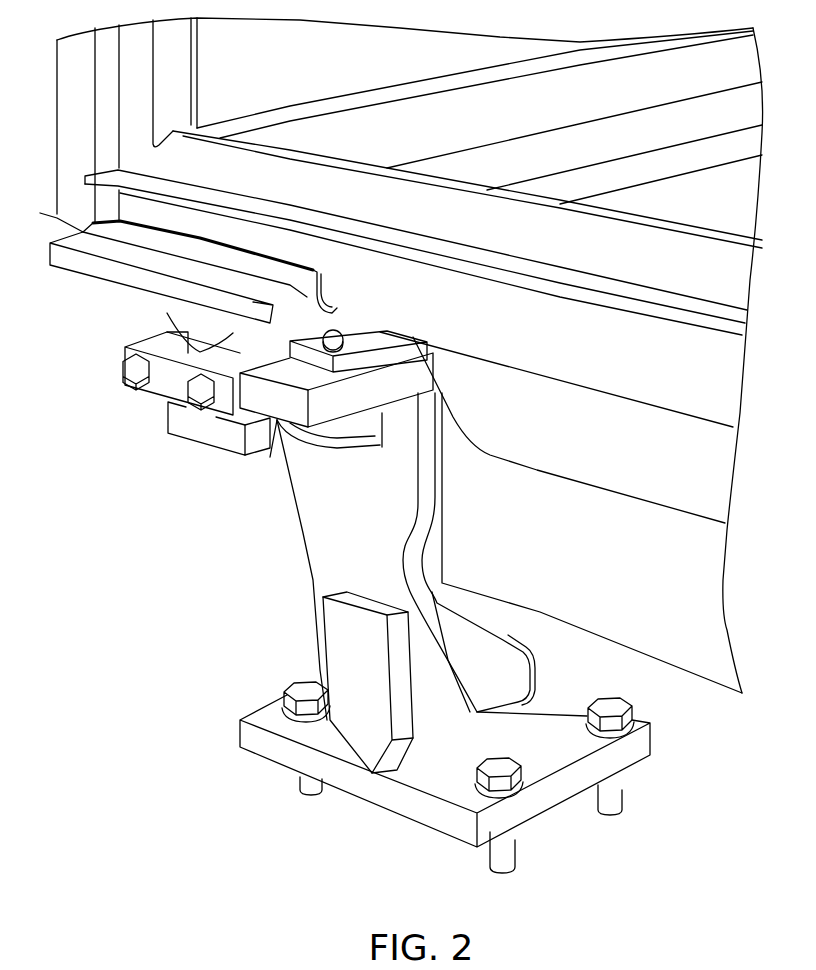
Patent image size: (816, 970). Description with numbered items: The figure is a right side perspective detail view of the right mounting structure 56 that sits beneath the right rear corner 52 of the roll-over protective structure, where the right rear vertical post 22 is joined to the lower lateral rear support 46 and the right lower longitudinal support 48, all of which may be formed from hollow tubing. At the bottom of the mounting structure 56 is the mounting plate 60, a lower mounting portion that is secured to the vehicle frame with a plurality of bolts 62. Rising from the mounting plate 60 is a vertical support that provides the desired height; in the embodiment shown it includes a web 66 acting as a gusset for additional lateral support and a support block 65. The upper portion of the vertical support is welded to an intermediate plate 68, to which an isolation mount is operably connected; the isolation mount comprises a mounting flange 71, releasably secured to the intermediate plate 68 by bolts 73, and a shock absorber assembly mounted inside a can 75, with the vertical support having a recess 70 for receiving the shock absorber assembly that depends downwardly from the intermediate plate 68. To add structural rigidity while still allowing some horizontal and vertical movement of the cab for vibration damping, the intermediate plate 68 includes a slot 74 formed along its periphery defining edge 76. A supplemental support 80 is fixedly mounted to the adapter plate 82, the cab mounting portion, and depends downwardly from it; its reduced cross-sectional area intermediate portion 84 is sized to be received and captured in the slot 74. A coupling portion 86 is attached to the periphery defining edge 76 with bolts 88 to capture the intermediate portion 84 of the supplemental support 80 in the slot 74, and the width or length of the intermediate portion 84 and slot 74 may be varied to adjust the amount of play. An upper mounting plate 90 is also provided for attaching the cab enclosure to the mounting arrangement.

The right rear vertical post 22 is at (100, 104).
The lower lateral rear support 46 is at (379, 120).
The right lower longitudinal support 48 is at (522, 355).
The right rear corner 52 is at (54, 312).
The right mounting structure 56 is at (282, 549).
The mounting plate 60 is at (555, 807).
The bolts 62 is at (285, 697).
The support block 65 is at (345, 708).
The web 66 is at (507, 677).
The intermediate plate 68 is at (392, 397).
The recess 70 is at (373, 450).
The mounting flange 71 is at (362, 353).
The bolts 73 is at (343, 338).
The slot 74 is at (165, 335).
The can 75 is at (330, 438).
The periphery defining edge 76 is at (288, 427).
The supplemental support 80 is at (173, 317).
The adapter plate 82 is at (60, 262).
The intermediate portion 84 is at (330, 315).
The coupling portion 86 is at (243, 442).
The bolts 88 is at (120, 378).
The upper mounting plate 90 is at (100, 231).